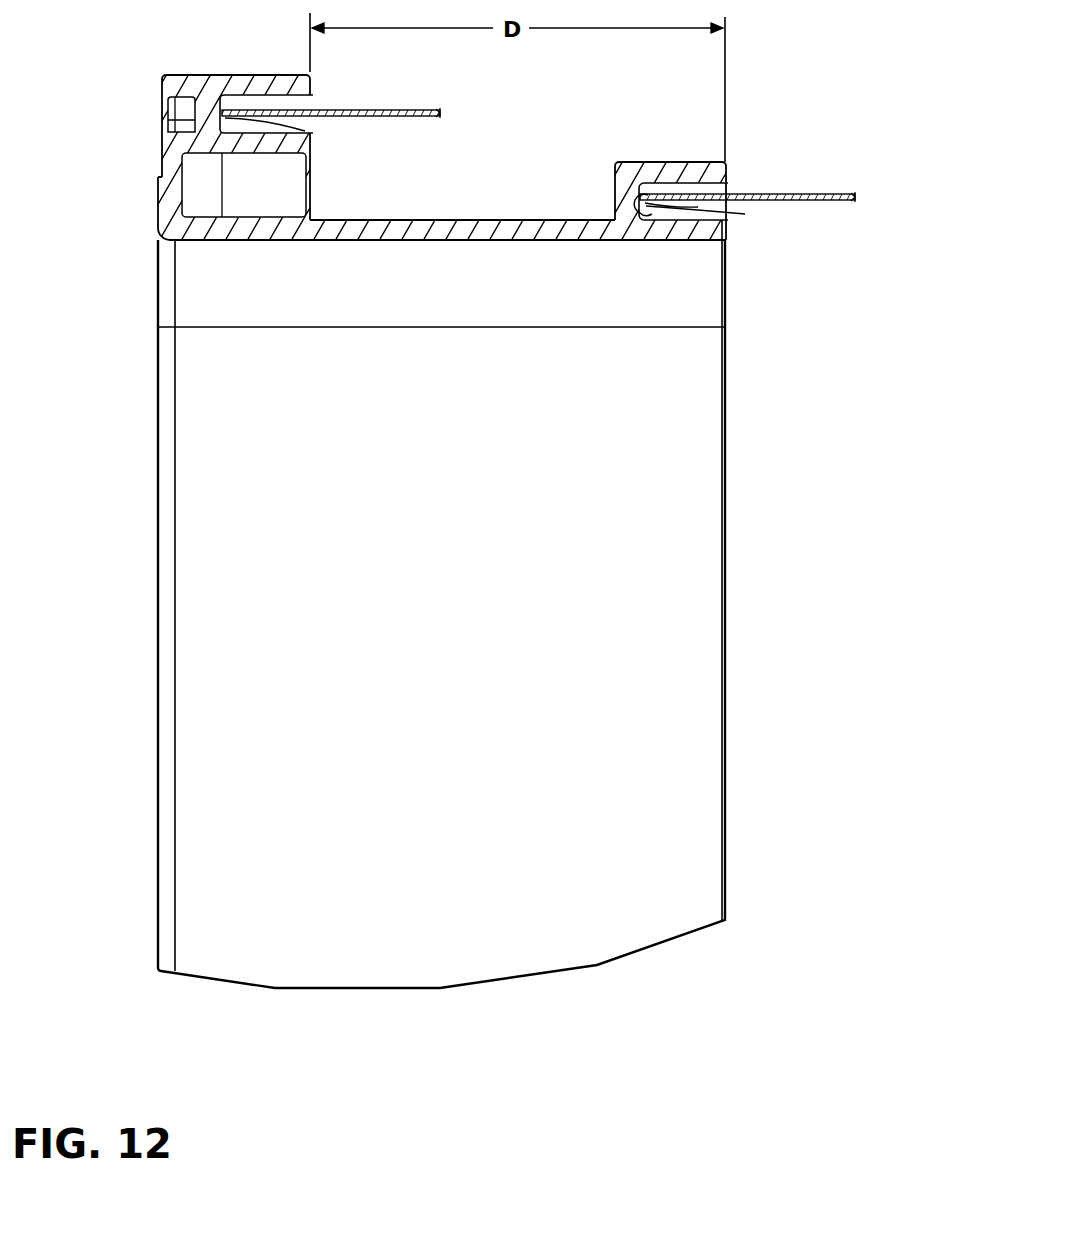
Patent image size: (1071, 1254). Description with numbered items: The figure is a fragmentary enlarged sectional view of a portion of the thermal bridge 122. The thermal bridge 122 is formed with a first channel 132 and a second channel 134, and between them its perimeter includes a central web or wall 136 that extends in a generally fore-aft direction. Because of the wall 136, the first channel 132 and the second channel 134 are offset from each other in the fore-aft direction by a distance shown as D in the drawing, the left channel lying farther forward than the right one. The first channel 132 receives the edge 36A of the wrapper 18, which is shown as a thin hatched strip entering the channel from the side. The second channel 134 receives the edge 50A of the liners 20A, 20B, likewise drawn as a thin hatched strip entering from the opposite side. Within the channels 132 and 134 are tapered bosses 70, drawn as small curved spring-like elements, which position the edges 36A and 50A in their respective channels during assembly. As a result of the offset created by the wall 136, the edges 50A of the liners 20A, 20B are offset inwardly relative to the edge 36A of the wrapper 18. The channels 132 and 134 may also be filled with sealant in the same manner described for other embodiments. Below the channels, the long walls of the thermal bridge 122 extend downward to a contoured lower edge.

The edge of wrapper 36A is at (212, 100).
The first channel 132 is at (297, 99).
The tapered bosses 70 is at (268, 117).
The wrapper 18 is at (413, 114).
The central web or wall 136 is at (415, 220).
The liner 20A is at (786, 162).
The liner 20B is at (814, 194).
The second channel 134 is at (698, 207).
The edge of liner 50A is at (640, 213).
The thermal bridge 122 is at (727, 462).